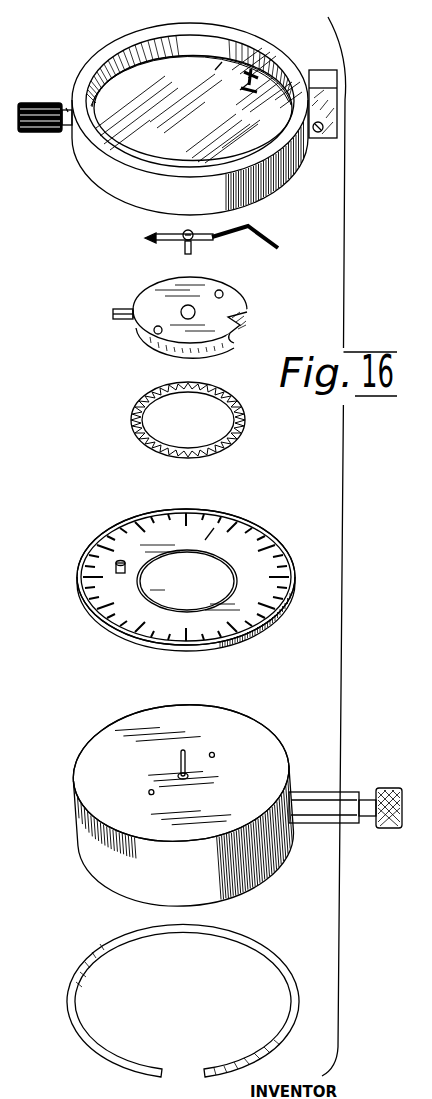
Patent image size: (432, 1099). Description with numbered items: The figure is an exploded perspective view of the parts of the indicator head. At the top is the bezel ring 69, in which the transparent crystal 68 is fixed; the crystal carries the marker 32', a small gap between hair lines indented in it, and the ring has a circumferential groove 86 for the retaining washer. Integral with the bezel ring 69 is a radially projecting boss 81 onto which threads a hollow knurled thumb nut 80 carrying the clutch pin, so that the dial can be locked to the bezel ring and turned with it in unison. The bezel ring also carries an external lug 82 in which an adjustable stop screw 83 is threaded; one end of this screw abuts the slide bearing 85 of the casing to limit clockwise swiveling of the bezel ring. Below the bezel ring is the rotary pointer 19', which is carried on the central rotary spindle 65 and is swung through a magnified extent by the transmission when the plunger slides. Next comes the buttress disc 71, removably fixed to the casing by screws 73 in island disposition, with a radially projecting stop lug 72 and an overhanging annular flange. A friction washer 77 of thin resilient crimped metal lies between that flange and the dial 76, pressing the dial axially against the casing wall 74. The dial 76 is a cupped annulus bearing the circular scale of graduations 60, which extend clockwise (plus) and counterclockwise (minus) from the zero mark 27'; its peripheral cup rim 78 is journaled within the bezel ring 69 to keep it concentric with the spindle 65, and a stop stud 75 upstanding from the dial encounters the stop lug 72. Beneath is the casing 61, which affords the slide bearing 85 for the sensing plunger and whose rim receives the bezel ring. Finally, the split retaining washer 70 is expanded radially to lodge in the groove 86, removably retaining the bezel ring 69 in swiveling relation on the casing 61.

The rotary pointer 19' is at (227, 233).
The zero mark 27' is at (230, 574).
The marker 32' is at (216, 106).
The graduations 60 is at (250, 527).
The casing 61 is at (183, 806).
The pointer spindle 65 is at (180, 760).
The crystal 68 is at (114, 58).
The bezel ring 69 is at (190, 119).
The split retaining washer 70 is at (124, 948).
The buttress disc 71 is at (246, 306).
The stop lug 72 is at (124, 308).
The screws 73 is at (222, 292).
The casing wall 74 is at (101, 741).
The stop stud 75 is at (134, 556).
The dial 76 is at (206, 540).
The friction washer 77 is at (140, 446).
The cup rim 78 is at (152, 512).
The knurled thumb nut 80 is at (36, 135).
The boss 81 is at (66, 108).
The external lug 82 is at (318, 80).
The stop screw 83 is at (321, 140).
The slide bearing 85 is at (318, 800).
The circumferential groove 86 is at (220, 60).